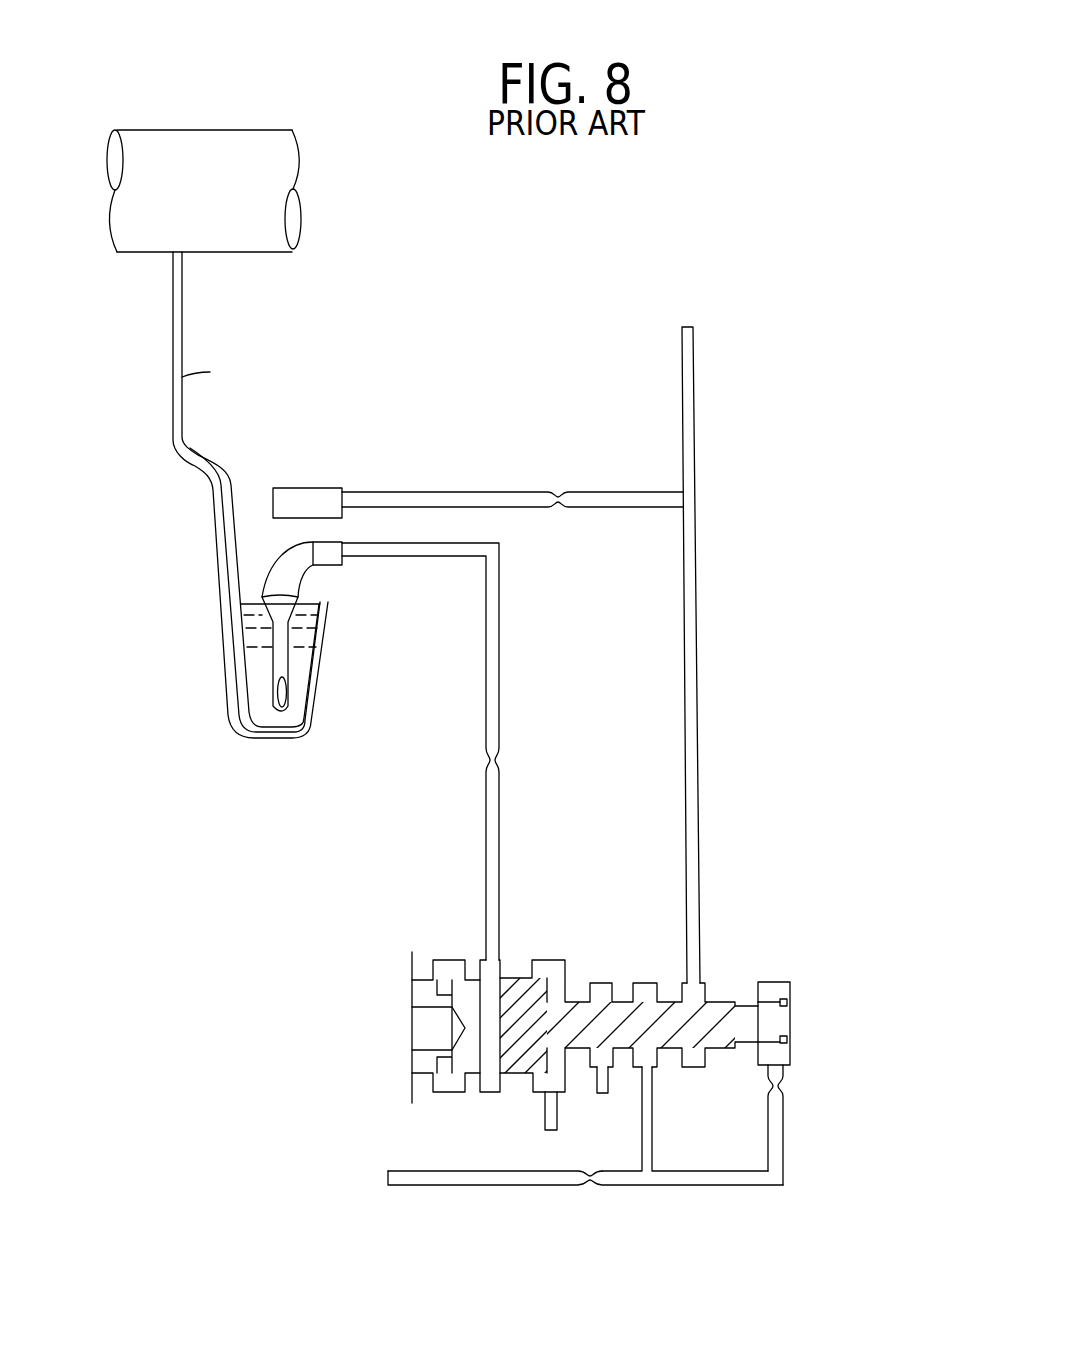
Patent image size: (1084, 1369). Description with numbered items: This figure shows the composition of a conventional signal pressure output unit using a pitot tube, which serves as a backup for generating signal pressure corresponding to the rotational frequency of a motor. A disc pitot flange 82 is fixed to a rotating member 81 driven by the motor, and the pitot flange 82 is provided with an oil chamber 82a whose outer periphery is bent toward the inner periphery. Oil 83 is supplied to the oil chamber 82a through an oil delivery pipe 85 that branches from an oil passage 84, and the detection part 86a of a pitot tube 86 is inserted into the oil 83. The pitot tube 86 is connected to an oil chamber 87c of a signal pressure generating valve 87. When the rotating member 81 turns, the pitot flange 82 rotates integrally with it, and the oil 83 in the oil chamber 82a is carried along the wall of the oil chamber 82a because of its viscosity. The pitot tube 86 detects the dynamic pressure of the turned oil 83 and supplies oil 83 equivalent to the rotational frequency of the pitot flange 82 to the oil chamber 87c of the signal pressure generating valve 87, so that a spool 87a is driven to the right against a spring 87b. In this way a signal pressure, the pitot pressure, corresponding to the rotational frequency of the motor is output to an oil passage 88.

The rotating member 81 is at (267, 130).
The pitot flange 82 is at (182, 313).
The oil chamber 82a is at (323, 667).
The oil 83 is at (262, 679).
The oil passage 84 is at (693, 360).
The oil delivery pipe 85 is at (458, 492).
The pitot tube 86 is at (498, 552).
The detection part 86a is at (296, 632).
The signal pressure generating valve 87 is at (613, 946).
The spool 87a is at (741, 1000).
The spring 87b is at (790, 1060).
The oil chamber 87c is at (480, 964).
The oil passage 88 is at (512, 1180).